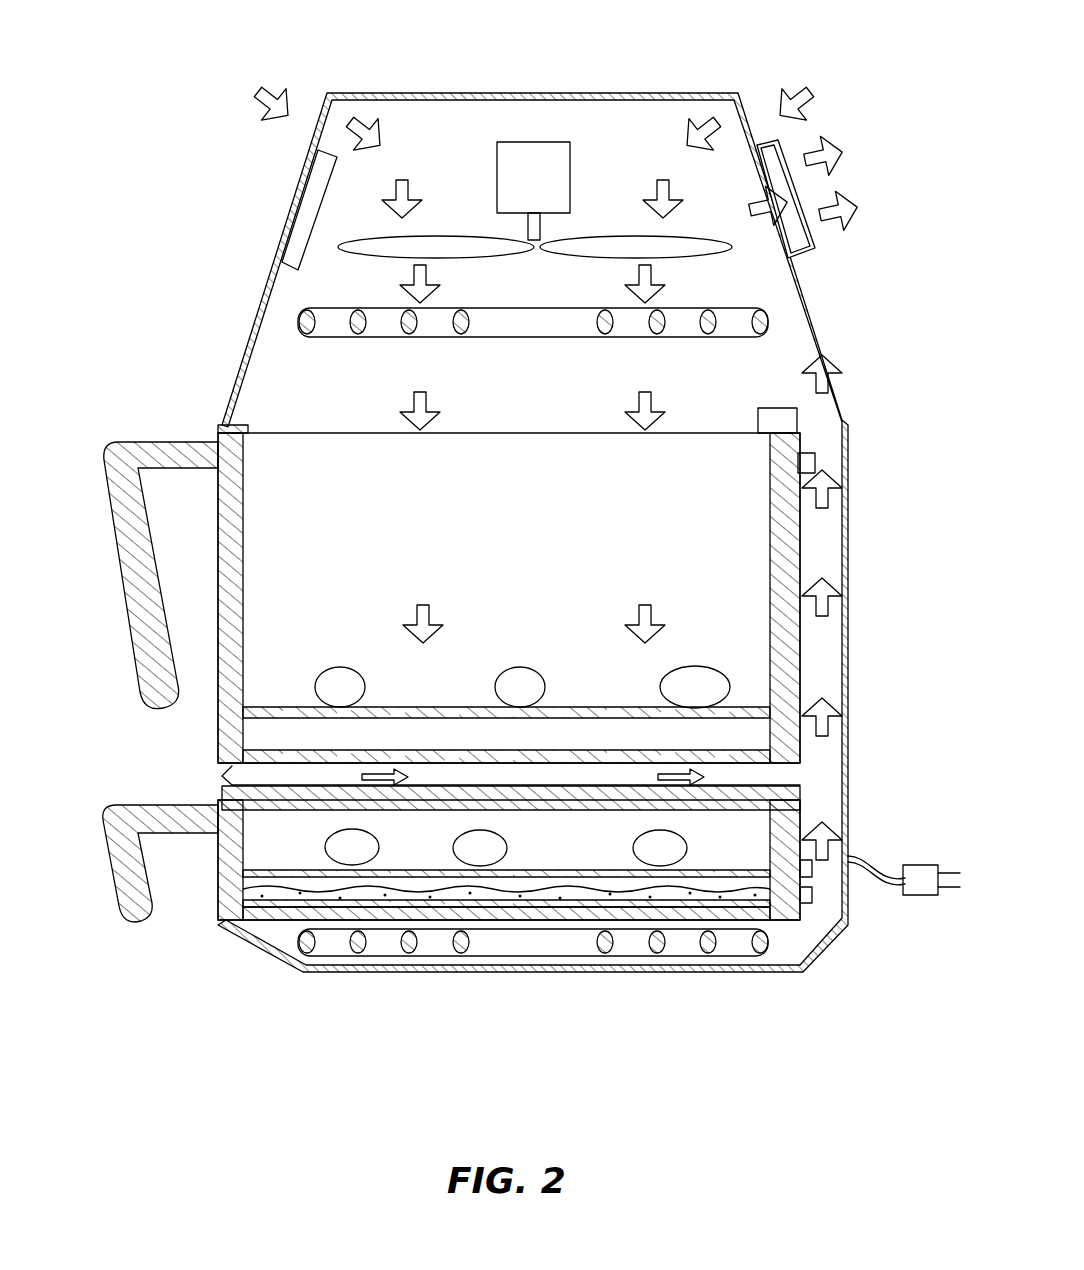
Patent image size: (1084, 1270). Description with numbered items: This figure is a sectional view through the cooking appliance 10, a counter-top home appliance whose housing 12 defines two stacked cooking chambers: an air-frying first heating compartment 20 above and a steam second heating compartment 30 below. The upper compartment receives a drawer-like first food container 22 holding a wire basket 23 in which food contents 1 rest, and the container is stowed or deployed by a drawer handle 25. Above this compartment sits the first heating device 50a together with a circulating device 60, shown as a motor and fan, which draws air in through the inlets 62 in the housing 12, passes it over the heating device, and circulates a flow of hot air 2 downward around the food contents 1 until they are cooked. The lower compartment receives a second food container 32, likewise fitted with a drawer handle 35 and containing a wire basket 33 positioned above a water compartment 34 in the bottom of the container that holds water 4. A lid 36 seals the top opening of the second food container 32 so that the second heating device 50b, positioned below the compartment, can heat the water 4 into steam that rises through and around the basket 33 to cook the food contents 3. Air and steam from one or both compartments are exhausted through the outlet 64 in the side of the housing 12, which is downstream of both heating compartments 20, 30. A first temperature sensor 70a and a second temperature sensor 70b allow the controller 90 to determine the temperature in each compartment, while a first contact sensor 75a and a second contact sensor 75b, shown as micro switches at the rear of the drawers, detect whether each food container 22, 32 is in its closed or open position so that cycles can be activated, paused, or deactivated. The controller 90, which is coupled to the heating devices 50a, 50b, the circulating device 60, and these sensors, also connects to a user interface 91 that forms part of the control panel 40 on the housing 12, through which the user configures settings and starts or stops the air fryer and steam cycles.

The cooking appliance 10 is at (88, 110).
The housing 12 is at (888, 572).
The first heating compartment 20 is at (421, 562).
The first food container 22 is at (265, 554).
The wire basket 23 is at (578, 706).
The drawer handle 25 is at (133, 582).
The second heating compartment 30 is at (435, 872).
The second food container 32 is at (252, 845).
The wire basket 33 is at (580, 870).
The water compartment 34 is at (781, 895).
The drawer handle 35 is at (122, 862).
The lid 36 is at (777, 785).
The control panel 40 is at (252, 230).
The first heating device 50a is at (750, 305).
The second heating device 50b is at (738, 955).
The circulating device 60 is at (592, 184).
The inlet 62 is at (322, 108).
The outlet 64 is at (798, 196).
The first temperature sensor 70a is at (800, 420).
The second temperature sensor 70b is at (815, 902).
The first contact sensor 75a is at (817, 463).
The second contact sensor 75b is at (816, 885).
The controller 90 is at (338, 176).
The user interface 91 is at (288, 208).
The food contents 1 is at (332, 668).
The flow of hot air 2 is at (412, 398).
The food contents 3 is at (455, 843).
The water 4 is at (240, 922).